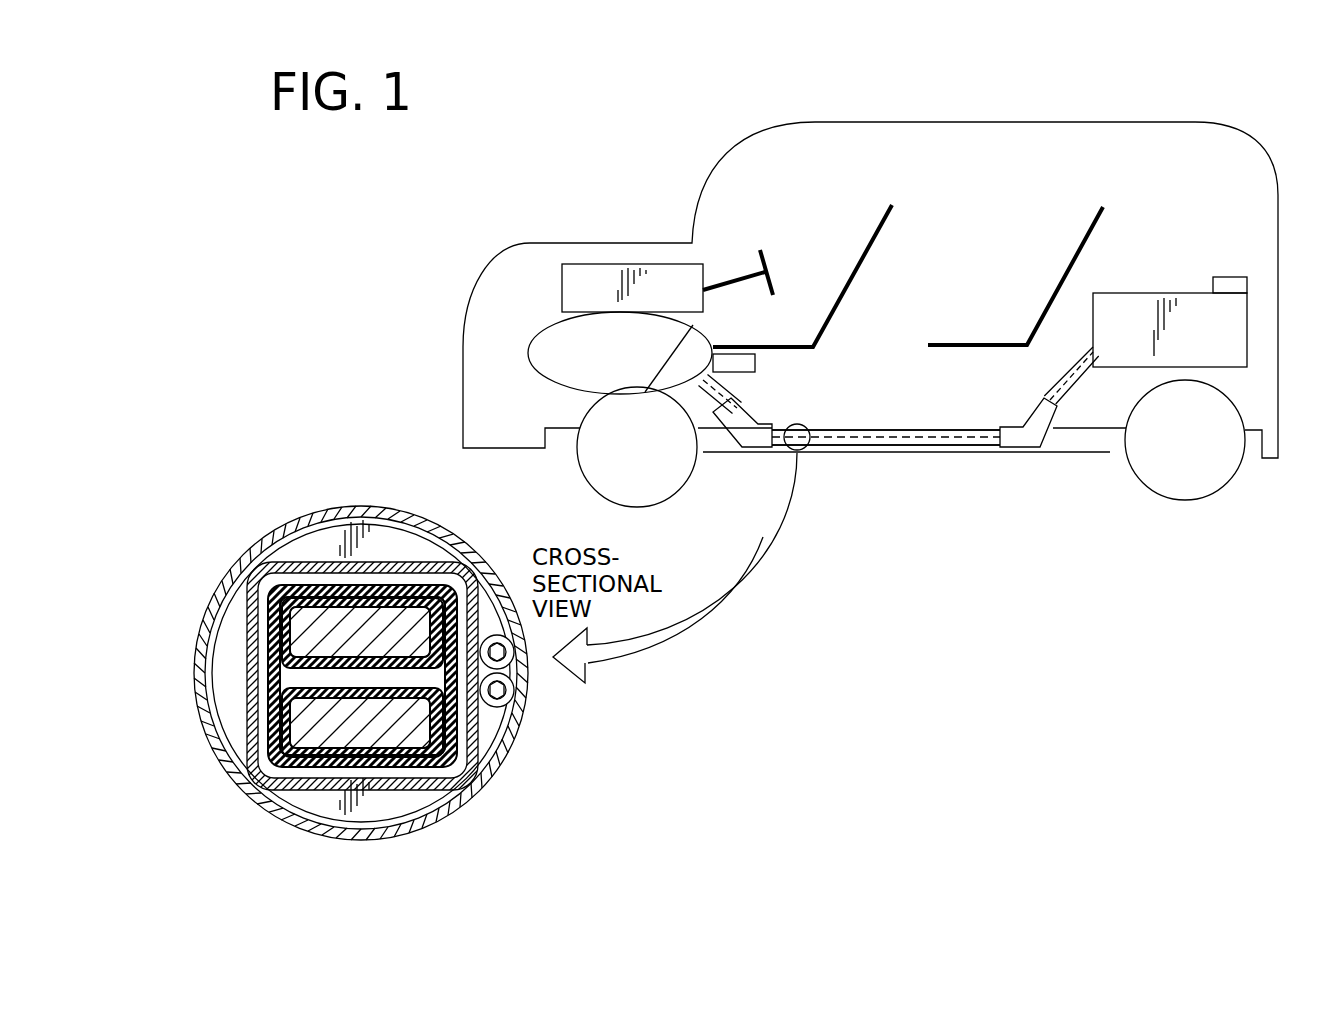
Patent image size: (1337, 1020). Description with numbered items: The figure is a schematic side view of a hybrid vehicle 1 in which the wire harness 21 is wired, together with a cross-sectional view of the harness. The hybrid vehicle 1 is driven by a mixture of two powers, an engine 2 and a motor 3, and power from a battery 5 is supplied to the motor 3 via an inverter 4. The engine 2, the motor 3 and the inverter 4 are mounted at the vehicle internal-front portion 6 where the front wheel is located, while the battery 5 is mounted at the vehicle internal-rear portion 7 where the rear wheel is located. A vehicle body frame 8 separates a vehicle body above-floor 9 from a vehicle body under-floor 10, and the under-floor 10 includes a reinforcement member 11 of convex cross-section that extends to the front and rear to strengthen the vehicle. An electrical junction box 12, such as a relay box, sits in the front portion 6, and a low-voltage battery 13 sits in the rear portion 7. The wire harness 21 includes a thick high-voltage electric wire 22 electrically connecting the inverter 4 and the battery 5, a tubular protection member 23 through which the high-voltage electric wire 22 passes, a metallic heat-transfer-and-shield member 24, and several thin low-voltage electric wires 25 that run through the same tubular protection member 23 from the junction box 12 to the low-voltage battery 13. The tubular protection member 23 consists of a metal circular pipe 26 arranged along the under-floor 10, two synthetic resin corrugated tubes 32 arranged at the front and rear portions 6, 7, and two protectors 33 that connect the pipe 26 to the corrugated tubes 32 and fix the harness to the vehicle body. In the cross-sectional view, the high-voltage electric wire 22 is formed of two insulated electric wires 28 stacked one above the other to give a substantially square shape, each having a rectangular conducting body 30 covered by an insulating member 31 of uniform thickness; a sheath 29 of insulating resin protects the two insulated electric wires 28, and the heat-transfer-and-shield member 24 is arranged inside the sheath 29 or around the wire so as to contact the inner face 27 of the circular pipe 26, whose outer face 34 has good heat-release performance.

The hybrid vehicle 1 is at (1068, 108).
The engine 2 is at (607, 276).
The motor 3 is at (522, 347).
The inverter 4 is at (697, 340).
The battery 5 is at (1130, 307).
The vehicle internal-front portion 6 is at (494, 408).
The vehicle internal-rear portion 7 is at (1268, 372).
The vehicle body frame 8 is at (1115, 407).
The vehicle body above-floor 9 is at (1076, 420).
The vehicle body under-floor 10 is at (1092, 440).
The reinforcement member 11 is at (1048, 447).
The electrical junction box 12 is at (760, 365).
The low-voltage battery 13 is at (1237, 278).
The wire harness 21 is at (905, 429).
The high-voltage electric wire 22 is at (945, 455).
The tubular protection member 23 is at (888, 578).
The heat-transfer-and-shield member 24 is at (250, 650).
The low-voltage electric wire 25 is at (503, 700).
The circular pipe 26 is at (863, 450).
The inner face 27 is at (370, 820).
The insulated electric wire 28 is at (142, 575).
The sheath 29 is at (257, 707).
The conducting body 30 is at (278, 612).
The insulating member 31 is at (280, 630).
The corrugated tube 32 is at (730, 395).
The protector 33 is at (750, 422).
The outer face 34 is at (375, 822).